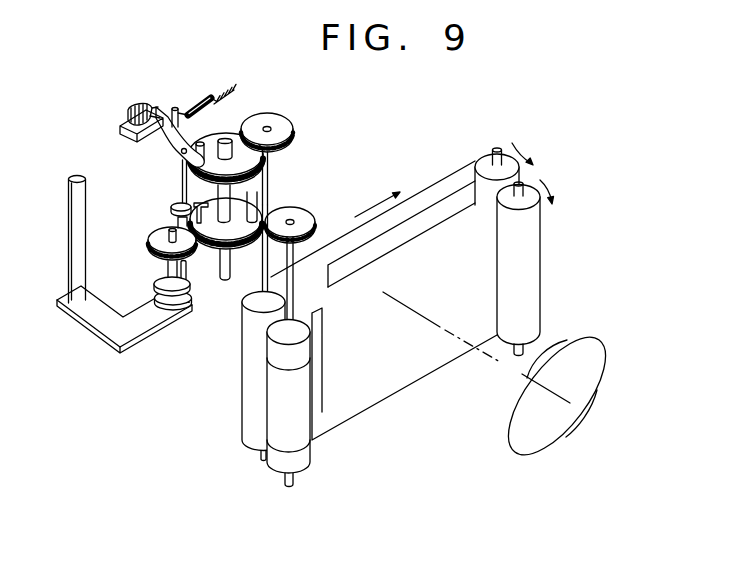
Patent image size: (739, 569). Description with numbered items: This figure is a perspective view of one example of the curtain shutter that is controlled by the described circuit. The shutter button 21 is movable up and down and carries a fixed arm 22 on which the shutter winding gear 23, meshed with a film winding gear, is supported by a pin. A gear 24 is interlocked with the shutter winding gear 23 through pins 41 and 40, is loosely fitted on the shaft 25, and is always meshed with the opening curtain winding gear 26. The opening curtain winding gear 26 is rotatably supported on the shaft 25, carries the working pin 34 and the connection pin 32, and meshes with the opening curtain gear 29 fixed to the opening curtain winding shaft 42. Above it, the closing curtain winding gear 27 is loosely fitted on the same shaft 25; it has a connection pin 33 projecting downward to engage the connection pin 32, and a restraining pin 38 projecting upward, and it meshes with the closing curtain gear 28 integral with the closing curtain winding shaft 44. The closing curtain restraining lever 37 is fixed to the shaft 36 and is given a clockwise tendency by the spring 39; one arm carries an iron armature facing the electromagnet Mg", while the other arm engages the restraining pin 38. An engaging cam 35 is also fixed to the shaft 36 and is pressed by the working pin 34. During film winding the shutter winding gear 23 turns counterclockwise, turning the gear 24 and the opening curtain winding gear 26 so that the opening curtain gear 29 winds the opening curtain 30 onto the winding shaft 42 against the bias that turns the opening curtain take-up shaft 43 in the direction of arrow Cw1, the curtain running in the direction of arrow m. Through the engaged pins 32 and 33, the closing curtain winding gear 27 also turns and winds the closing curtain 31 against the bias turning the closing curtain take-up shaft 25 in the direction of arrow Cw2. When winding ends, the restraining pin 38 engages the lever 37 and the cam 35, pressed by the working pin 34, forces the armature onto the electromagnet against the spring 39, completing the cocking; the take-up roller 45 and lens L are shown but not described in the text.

The shutter button 21 is at (70, 208).
The arm 22 is at (97, 316).
The shutter winding gear 23 is at (158, 276).
The gear 24 is at (150, 238).
The shaft 25 is at (227, 278).
The opening curtain winding gear 26 is at (243, 233).
The closing curtain winding gear 27 is at (238, 137).
The closing curtain gear 28 is at (278, 122).
The opening curtain gear 29 is at (302, 217).
The opening curtain 30 is at (398, 376).
The closing curtain 31 is at (421, 200).
The connection pin 32 is at (263, 210).
The connection pin 33 is at (269, 181).
The working pin 34 is at (178, 223).
The engaging cam 35 is at (171, 206).
The shaft 36 is at (182, 188).
The closing curtain restraining lever 37 is at (178, 148).
The restraining pin 38 is at (199, 141).
The spring 39 is at (200, 98).
The pin 40 is at (186, 264).
The pin 41 is at (172, 309).
The opening curtain winding shaft 42 is at (282, 464).
The opening curtain take-up shaft 43 is at (528, 283).
The closing curtain winding shaft 44 is at (247, 356).
The roller 45 is at (482, 158).
The lens L is at (574, 352).
The belt movement direction m is at (377, 193).
The arrow CW1 Cw1 is at (567, 188).
The arrow CW2 Cw2 is at (534, 145).